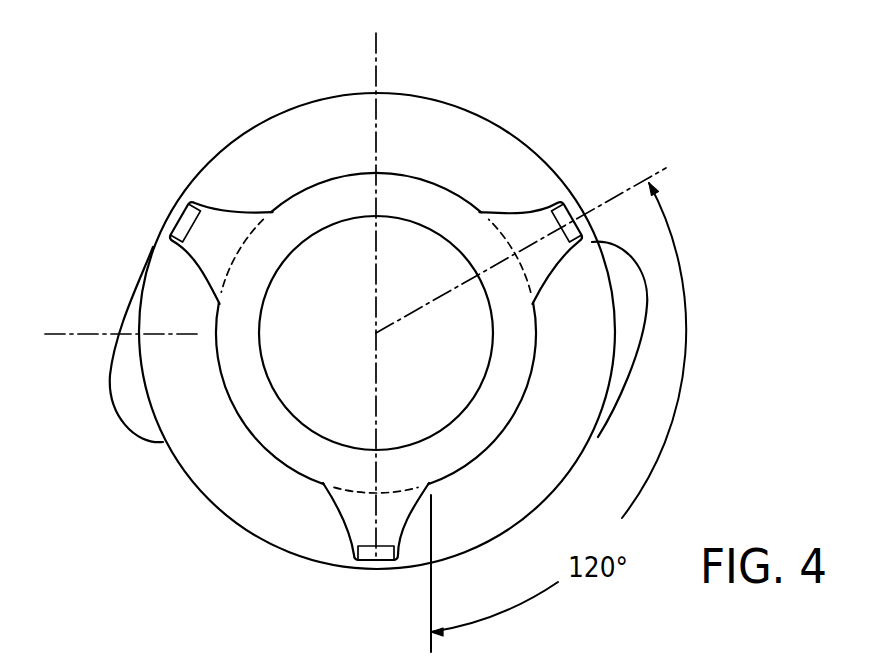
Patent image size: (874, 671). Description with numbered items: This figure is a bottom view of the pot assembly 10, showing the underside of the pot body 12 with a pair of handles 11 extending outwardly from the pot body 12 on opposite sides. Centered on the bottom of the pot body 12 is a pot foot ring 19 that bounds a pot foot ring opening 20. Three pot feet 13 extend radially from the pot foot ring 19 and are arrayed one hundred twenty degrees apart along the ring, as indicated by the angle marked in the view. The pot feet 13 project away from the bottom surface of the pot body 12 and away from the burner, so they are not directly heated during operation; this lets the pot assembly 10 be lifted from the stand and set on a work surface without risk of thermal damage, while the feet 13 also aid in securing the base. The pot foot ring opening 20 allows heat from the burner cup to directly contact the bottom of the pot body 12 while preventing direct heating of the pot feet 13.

The pot assembly 10 is at (175, 162).
The handles 11 is at (122, 300).
The pot body 12 is at (445, 95).
The pot feet 13 is at (547, 200).
The pot foot ring 19 is at (348, 173).
The pot foot ring opening 20 is at (318, 225).